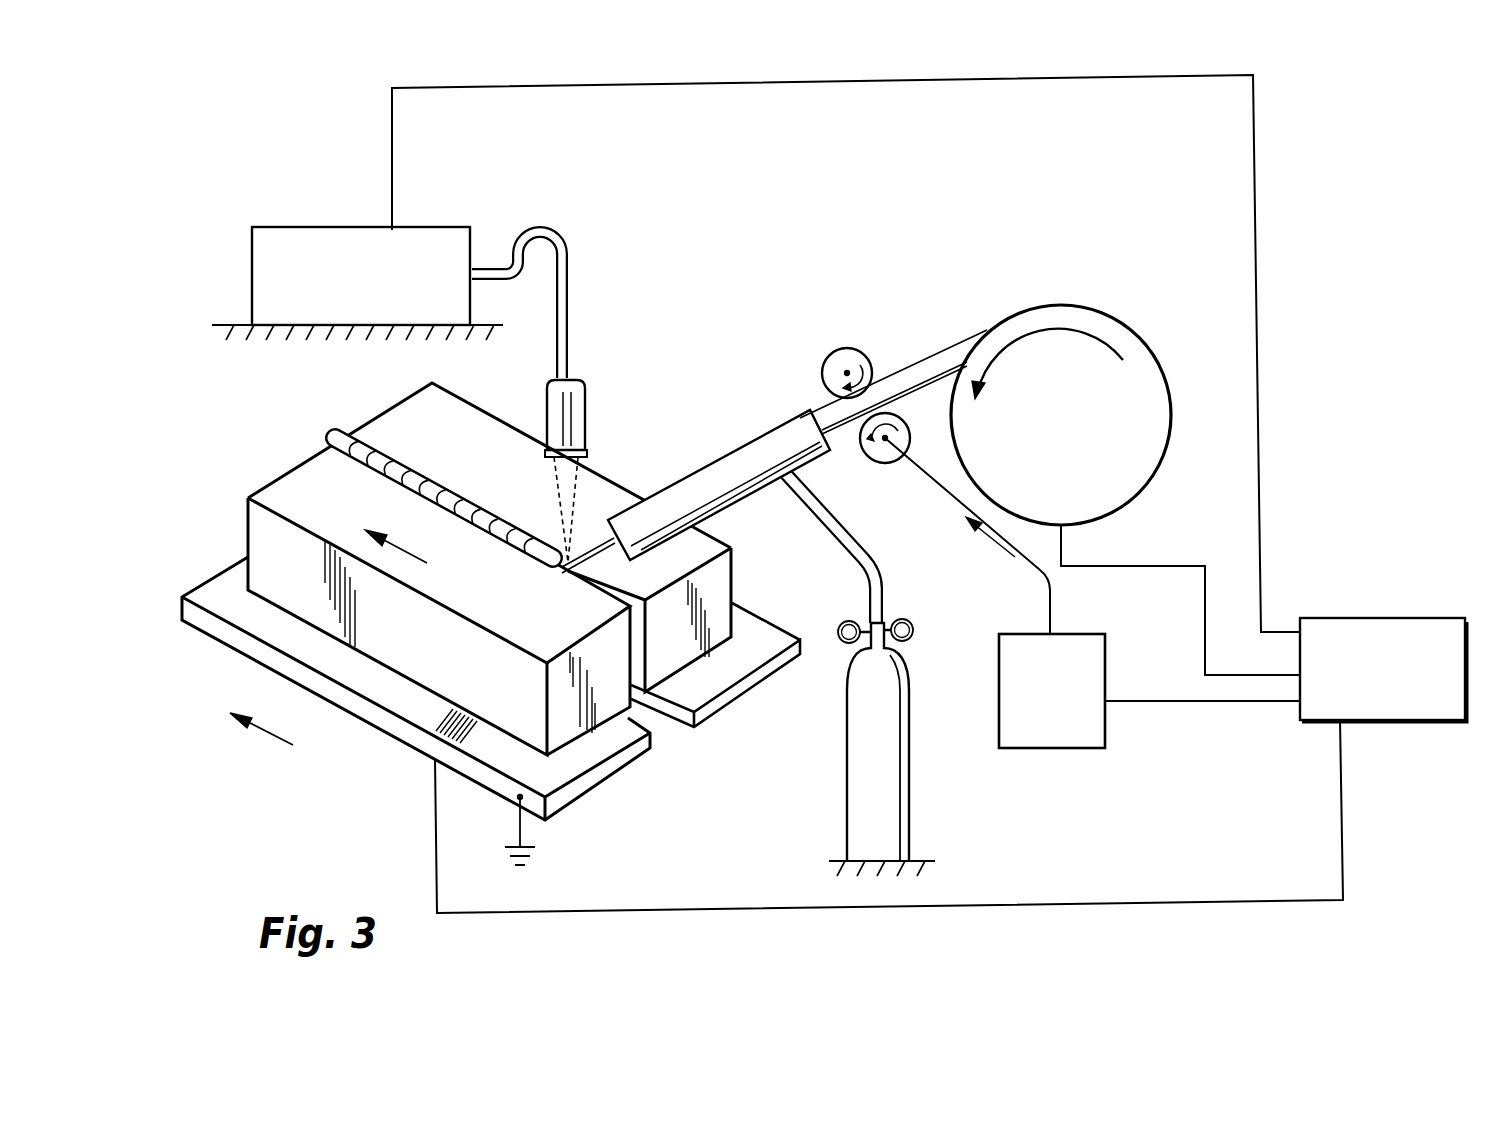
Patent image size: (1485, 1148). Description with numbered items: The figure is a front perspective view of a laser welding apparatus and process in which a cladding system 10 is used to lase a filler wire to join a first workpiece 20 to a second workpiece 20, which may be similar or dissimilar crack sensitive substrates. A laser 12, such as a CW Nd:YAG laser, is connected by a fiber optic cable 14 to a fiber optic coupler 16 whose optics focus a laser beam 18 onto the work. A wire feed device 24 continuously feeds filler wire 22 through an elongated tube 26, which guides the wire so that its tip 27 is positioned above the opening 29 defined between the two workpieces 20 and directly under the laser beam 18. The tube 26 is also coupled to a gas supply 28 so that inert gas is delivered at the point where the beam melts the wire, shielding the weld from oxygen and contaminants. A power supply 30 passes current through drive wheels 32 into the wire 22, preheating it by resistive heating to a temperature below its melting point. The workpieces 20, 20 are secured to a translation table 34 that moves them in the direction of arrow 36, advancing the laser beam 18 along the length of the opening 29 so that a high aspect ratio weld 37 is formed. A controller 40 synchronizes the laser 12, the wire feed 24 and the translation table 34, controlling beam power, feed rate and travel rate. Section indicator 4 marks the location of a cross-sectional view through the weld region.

The cladding system 10 is at (745, 282).
The laser 12 is at (424, 234).
The fiber optic cable 14 is at (545, 229).
The fiber optic coupler 16 is at (560, 393).
The laser beam 18 is at (604, 471).
The workpiece 20 is at (470, 475).
The filler wire 22 is at (951, 340).
The wire feed device 24 is at (1079, 305).
The elongated tube 26 is at (716, 476).
The tip 27 is at (553, 573).
The gas supply 28 is at (860, 771).
The opening 29 is at (638, 653).
The power supply 30 is at (1072, 634).
The drive wheels 32 is at (866, 349).
The translation table 34 is at (400, 706).
The arrow 36 is at (270, 738).
The high aspect ratio weld 37 is at (332, 436).
The controller 40 is at (1300, 719).
The section line 4 is at (792, 538).